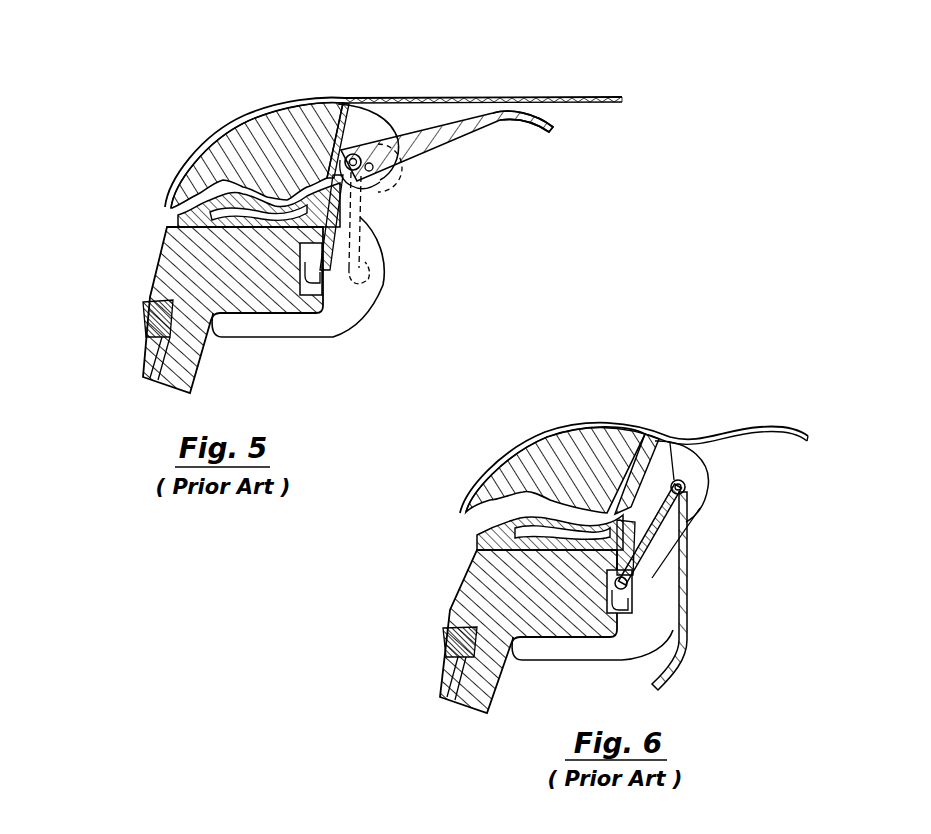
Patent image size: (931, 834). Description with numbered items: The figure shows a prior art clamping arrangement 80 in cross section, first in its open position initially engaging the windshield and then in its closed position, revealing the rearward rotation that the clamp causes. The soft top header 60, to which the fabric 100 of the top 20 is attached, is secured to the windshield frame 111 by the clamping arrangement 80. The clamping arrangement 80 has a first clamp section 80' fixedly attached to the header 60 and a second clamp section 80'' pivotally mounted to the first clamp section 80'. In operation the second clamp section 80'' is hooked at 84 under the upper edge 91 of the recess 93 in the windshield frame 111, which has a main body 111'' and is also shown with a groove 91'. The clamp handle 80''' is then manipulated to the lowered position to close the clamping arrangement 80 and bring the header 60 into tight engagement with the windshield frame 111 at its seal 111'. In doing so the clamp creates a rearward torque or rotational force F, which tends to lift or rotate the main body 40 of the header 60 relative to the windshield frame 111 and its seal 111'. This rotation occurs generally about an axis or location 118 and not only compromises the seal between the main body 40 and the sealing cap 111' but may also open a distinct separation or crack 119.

In FIG. 5, the top 20 is at (577, 90).
In FIG. 6, the top 20 is at (773, 427).
In FIG. 5, the main body 40 is at (287, 147).
In FIG. 6, the main body 40 is at (577, 450).
In FIG. 5, the soft top header 60 is at (260, 150).
In FIG. 6, the soft top header 60 is at (553, 467).
In FIG. 5, the clamping arrangement 80 is at (476, 225).
In FIG. 6, the clamping arrangement 80 is at (755, 495).
In FIG. 5, the first clamp section 80' is at (370, 115).
In FIG. 6, the first clamp section 80' is at (706, 509).
In FIG. 5, the second clamp section 80'' is at (447, 189).
In FIG. 6, the second clamp section 80'' is at (696, 534).
In FIG. 5, the clamp handle 80''' is at (521, 144).
In FIG. 6, the clamp handle 80''' is at (712, 591).
In FIG. 5, the hook 84 is at (372, 284).
In FIG. 5, the upper edge 91 is at (278, 265).
In FIG. 6, the upper edge 91 is at (635, 606).
In FIG. 6, the channel groove 91' is at (595, 609).
In FIG. 5, the recess 93 is at (307, 337).
In FIG. 6, the recess 93 is at (623, 660).
In FIG. 5, the fabric 100 is at (470, 97).
In FIG. 6, the fabric 100 is at (667, 437).
In FIG. 5, the windshield frame 111 is at (216, 275).
In FIG. 6, the windshield frame 111 is at (486, 631).
In FIG. 5, the seal 111' is at (232, 162).
In FIG. 6, the seal 111' is at (508, 542).
In FIG. 5, the main body 111'' is at (210, 328).
In FIG. 6, the main body 111'' is at (497, 651).
In FIG. 6, the axis 118 is at (613, 440).
In FIG. 6, the separation 119 is at (470, 523).
In FIG. 6, the rearward rotational force F is at (753, 410).